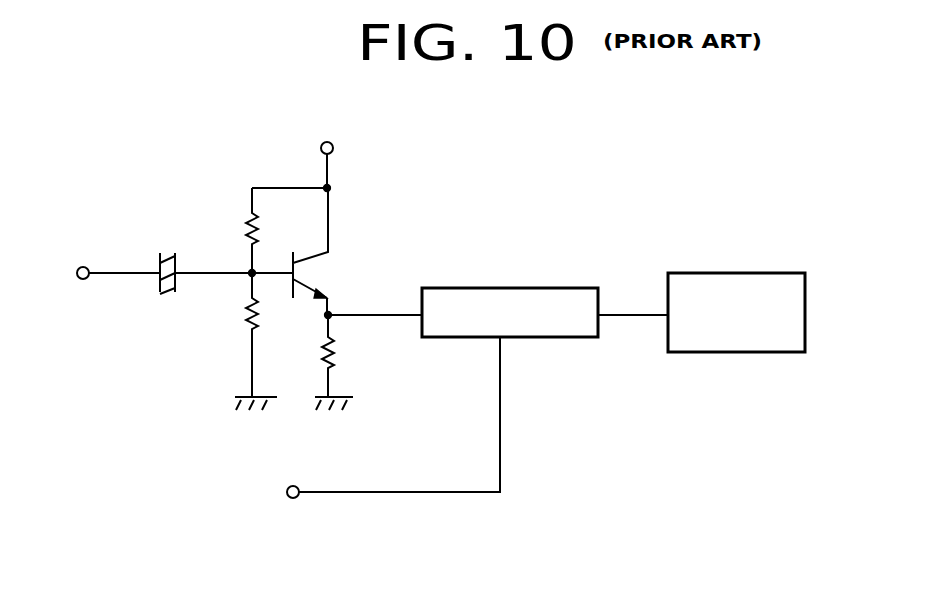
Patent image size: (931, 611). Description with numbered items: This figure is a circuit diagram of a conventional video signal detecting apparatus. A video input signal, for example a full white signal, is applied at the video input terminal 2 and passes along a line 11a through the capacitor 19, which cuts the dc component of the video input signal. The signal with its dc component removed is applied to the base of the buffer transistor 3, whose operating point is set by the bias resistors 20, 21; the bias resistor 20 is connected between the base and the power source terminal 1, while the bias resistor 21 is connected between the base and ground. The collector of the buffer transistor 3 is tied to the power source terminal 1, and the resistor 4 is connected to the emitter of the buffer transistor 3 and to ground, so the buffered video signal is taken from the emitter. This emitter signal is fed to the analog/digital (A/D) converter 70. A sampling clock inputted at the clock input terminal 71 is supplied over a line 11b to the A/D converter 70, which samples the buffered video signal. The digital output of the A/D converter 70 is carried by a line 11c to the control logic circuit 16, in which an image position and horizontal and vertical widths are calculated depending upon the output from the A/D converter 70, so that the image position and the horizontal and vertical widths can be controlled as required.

The power source terminal 1 is at (334, 144).
The video input terminal 2 is at (83, 266).
The buffer transistor 3 is at (311, 273).
The resistor 4 is at (342, 361).
The control logic circuit 16 is at (712, 273).
The capacitor 19 is at (168, 251).
The bias resistor 20 is at (262, 233).
The bias resistor 21 is at (258, 330).
The analog/digital (A/D) converter 70 is at (493, 287).
The clock input terminal 71 is at (296, 487).
The signal line 11a is at (113, 282).
The signal line 11b is at (405, 490).
The signal line 11c is at (621, 315).